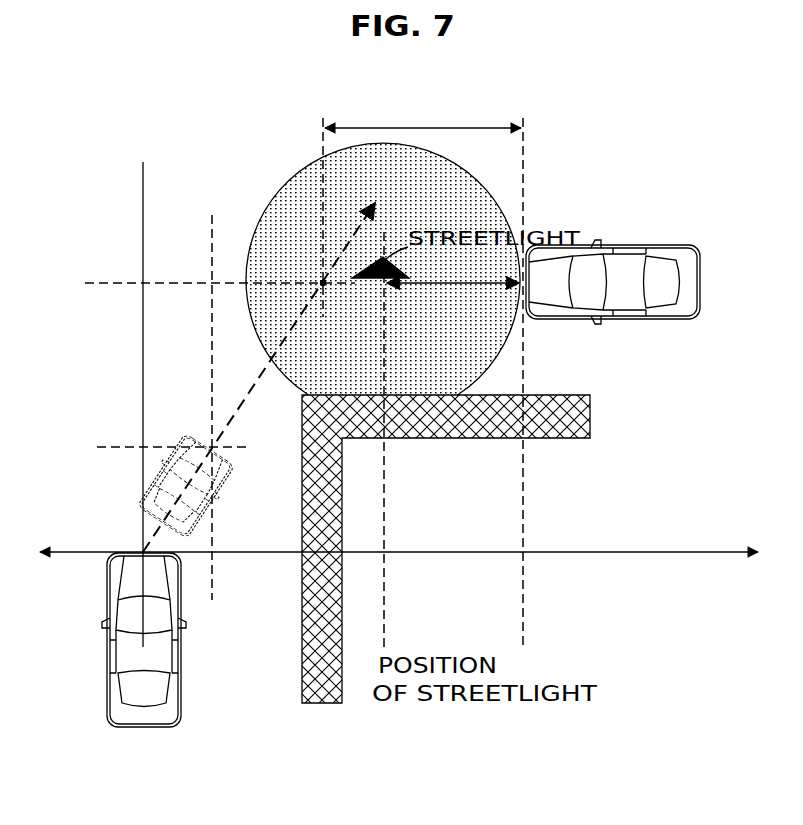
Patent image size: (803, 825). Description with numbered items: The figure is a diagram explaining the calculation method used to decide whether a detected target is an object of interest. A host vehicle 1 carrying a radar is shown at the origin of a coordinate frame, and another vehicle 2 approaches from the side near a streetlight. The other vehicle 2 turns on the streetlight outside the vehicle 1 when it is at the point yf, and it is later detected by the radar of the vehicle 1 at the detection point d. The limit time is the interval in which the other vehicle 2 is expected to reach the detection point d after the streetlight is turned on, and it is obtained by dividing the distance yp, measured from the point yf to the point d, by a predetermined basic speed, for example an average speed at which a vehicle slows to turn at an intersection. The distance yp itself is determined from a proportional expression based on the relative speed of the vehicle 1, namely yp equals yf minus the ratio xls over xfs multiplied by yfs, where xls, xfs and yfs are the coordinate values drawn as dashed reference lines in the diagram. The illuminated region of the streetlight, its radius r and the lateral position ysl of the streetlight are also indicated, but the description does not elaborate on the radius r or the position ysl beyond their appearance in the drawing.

The vehicle 1 is at (183, 650).
The other vehicle 2 is at (616, 250).
The detection point d is at (323, 283).
The streetlight illumination radius r is at (453, 270).
The distance to the detection point yp is at (423, 115).
The element xls is at (220, 271).
The element xfs is at (173, 461).
The element yfs is at (231, 407).
The streetlight lateral coordinate ysl is at (403, 441).
The point of the other vehicle where the streetlight is turned on yf is at (538, 384).